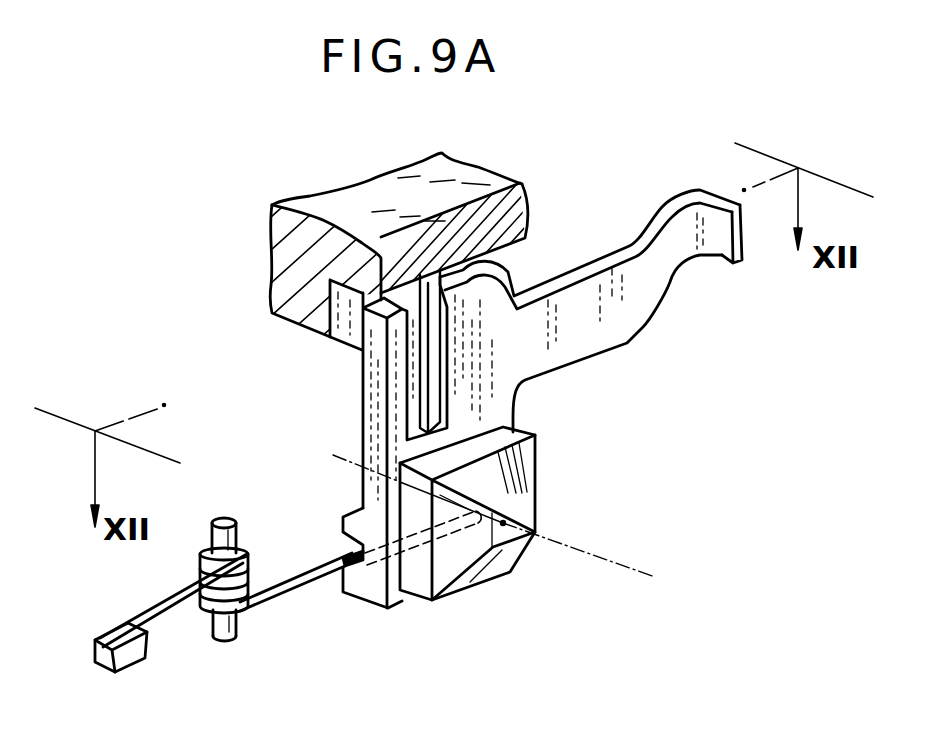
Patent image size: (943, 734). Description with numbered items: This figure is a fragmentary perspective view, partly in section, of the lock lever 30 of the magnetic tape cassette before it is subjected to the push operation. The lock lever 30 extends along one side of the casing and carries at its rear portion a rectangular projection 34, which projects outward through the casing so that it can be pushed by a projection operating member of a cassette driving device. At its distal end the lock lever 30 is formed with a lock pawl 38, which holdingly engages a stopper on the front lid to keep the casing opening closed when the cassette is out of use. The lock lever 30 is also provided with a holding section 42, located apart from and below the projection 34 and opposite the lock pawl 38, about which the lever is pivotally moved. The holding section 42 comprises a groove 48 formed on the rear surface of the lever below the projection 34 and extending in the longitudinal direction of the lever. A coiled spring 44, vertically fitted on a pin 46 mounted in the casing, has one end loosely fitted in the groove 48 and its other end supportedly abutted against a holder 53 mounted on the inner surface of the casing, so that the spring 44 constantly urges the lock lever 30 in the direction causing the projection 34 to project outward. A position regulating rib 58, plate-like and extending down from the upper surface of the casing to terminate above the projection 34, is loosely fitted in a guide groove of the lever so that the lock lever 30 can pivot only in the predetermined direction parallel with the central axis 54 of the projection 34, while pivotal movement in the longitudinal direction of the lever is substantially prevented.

The lock lever 30 is at (627, 343).
The projection 34 is at (535, 473).
The lock pawl 38 is at (722, 255).
The holding section 42 is at (354, 517).
The spring 44 is at (247, 610).
The pin 46 is at (210, 540).
The groove 48 is at (348, 552).
The holder 53 is at (141, 667).
The central axis 54 is at (615, 560).
The position regulating rib 58 is at (430, 390).